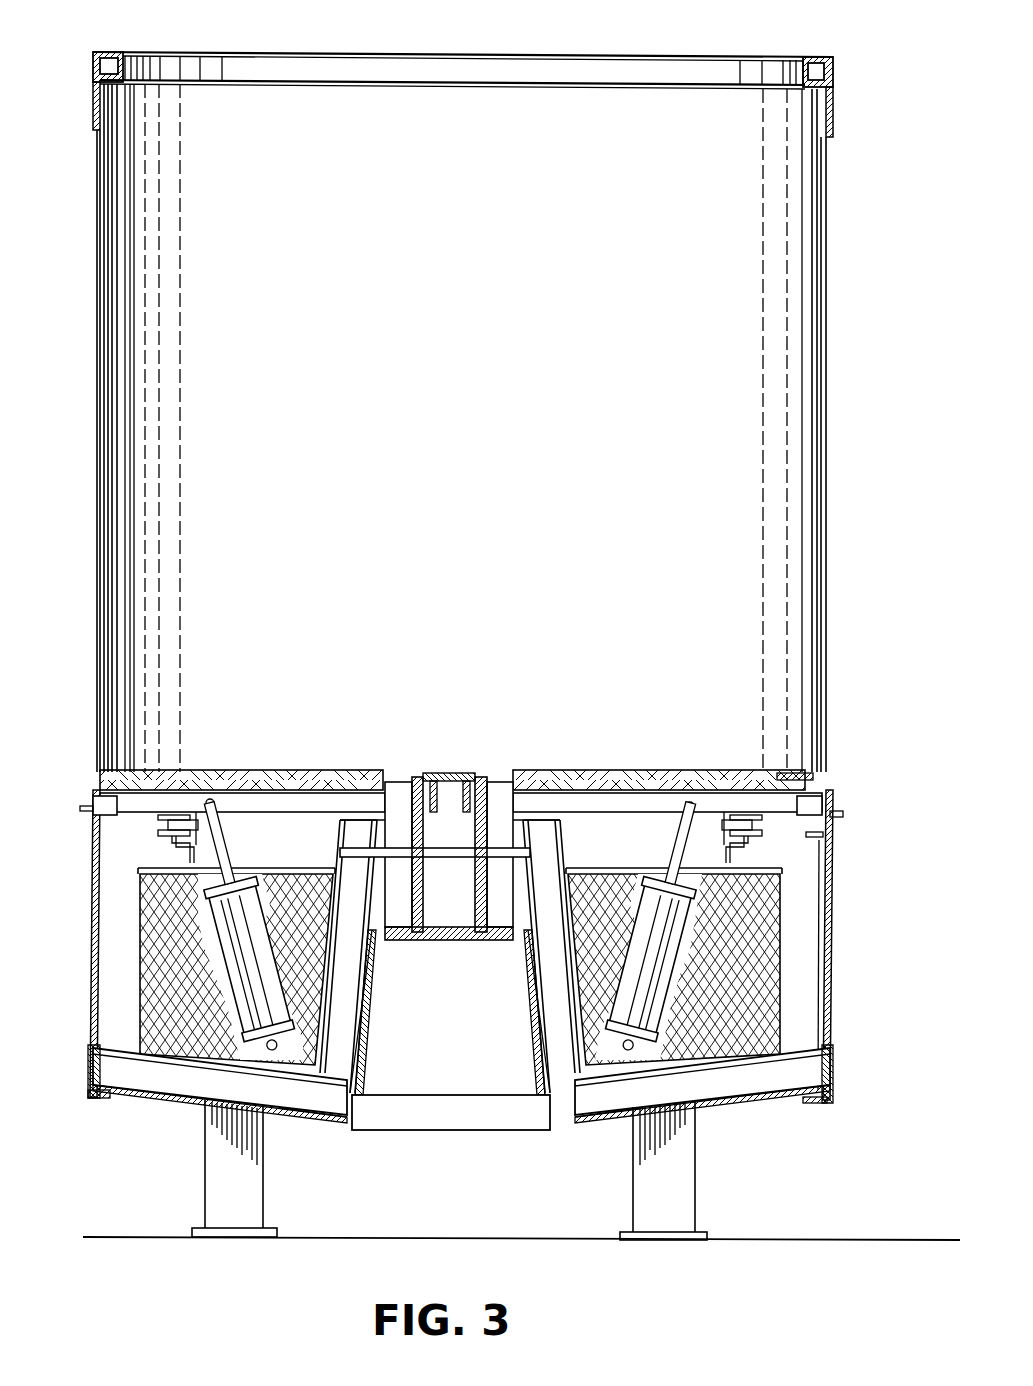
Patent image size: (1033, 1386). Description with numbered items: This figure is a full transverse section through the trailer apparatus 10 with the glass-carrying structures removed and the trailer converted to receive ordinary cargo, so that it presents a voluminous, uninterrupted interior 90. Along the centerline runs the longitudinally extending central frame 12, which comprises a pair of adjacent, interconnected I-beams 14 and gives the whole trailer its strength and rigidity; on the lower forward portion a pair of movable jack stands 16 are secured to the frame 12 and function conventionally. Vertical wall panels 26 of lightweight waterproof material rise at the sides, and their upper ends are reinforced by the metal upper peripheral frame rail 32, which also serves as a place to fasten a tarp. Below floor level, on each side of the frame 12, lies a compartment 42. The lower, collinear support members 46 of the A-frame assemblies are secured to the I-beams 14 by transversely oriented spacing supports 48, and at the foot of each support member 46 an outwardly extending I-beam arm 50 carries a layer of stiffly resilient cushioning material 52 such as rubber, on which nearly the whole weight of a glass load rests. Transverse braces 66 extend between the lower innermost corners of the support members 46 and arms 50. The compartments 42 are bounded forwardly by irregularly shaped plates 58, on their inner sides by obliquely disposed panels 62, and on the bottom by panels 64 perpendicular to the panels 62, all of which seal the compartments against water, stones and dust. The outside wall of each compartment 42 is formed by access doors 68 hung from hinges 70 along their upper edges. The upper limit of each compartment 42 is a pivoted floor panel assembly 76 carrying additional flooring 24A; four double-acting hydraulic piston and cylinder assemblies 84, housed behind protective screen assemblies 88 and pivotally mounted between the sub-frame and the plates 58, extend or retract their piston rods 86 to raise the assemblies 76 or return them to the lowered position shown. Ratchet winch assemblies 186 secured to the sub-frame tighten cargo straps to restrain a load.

The trailer apparatus 10 is at (630, 41).
The central frame 12 is at (455, 768).
The I-beams 14 is at (445, 941).
The jack stands 16 is at (235, 1210).
The additional flooring 24A is at (298, 770).
The vertical wall panels 26 is at (822, 376).
The upper peripheral frame rail 32 is at (828, 62).
The compartments 42 is at (117, 1025).
The support members 46 is at (340, 988).
The spacing supports 48 is at (397, 843).
The I-beam arms 50 is at (217, 1082).
The resilient cushioning material 52 is at (187, 1058).
The irregularly shaped plates 58 is at (325, 853).
The obliquely disposed panels 62 is at (380, 1055).
The longitudinally extending panels 64 is at (287, 1113).
The transverse braces 66 is at (505, 1128).
The access doors 68 is at (93, 932).
The hinges 70 is at (93, 832).
The pivoted floor panel assemblies 76 is at (352, 770).
The hydraulic piston and cylinder assemblies 84 is at (236, 884).
The piston rods 86 is at (252, 880).
The protective screen assemblies 88 is at (135, 980).
The interior 90 is at (475, 338).
The ratchet winch assembly 186 is at (147, 843).